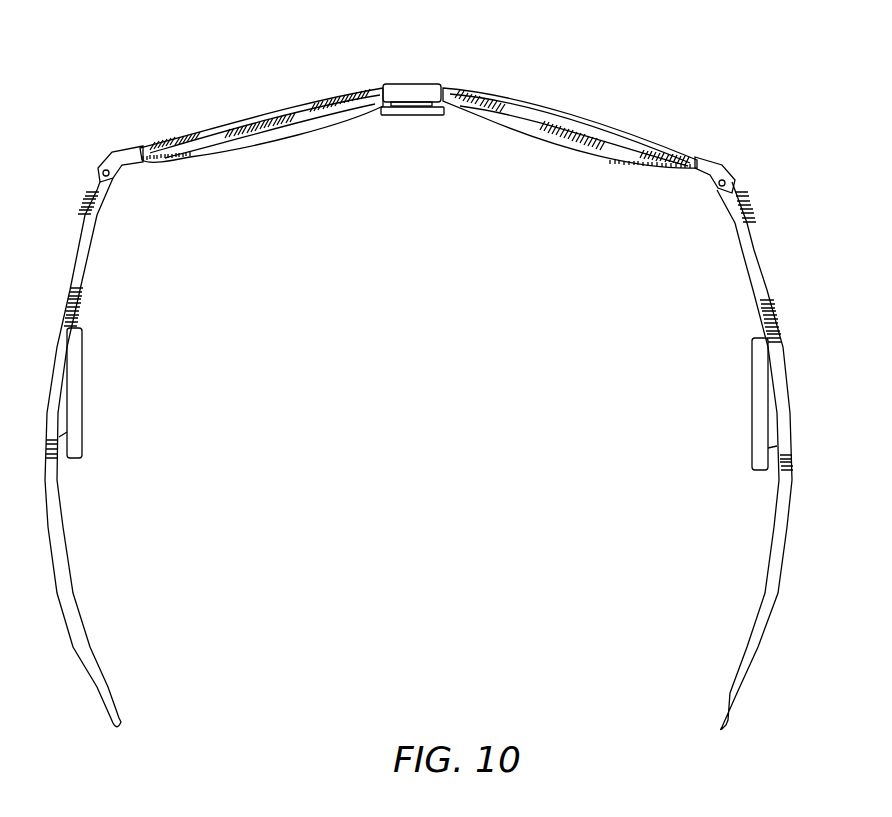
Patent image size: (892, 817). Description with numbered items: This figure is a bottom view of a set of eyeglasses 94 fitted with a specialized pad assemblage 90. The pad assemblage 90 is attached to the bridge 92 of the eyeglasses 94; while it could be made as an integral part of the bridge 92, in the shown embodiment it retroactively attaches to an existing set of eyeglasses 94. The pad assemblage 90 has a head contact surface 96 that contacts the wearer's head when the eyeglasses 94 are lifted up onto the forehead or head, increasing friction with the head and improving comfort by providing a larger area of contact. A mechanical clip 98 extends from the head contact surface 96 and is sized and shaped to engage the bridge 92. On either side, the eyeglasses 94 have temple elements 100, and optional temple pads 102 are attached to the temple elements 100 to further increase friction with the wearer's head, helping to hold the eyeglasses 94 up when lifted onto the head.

The specialized pad assemblage 90 is at (395, 84).
The bridge 92 is at (453, 86).
The eyeglasses 94 is at (563, 112).
The head contact surface 96 is at (417, 115).
The mechanical clip 98 is at (425, 94).
The temple elements 100 is at (753, 263).
The temple pads 102 is at (757, 393).